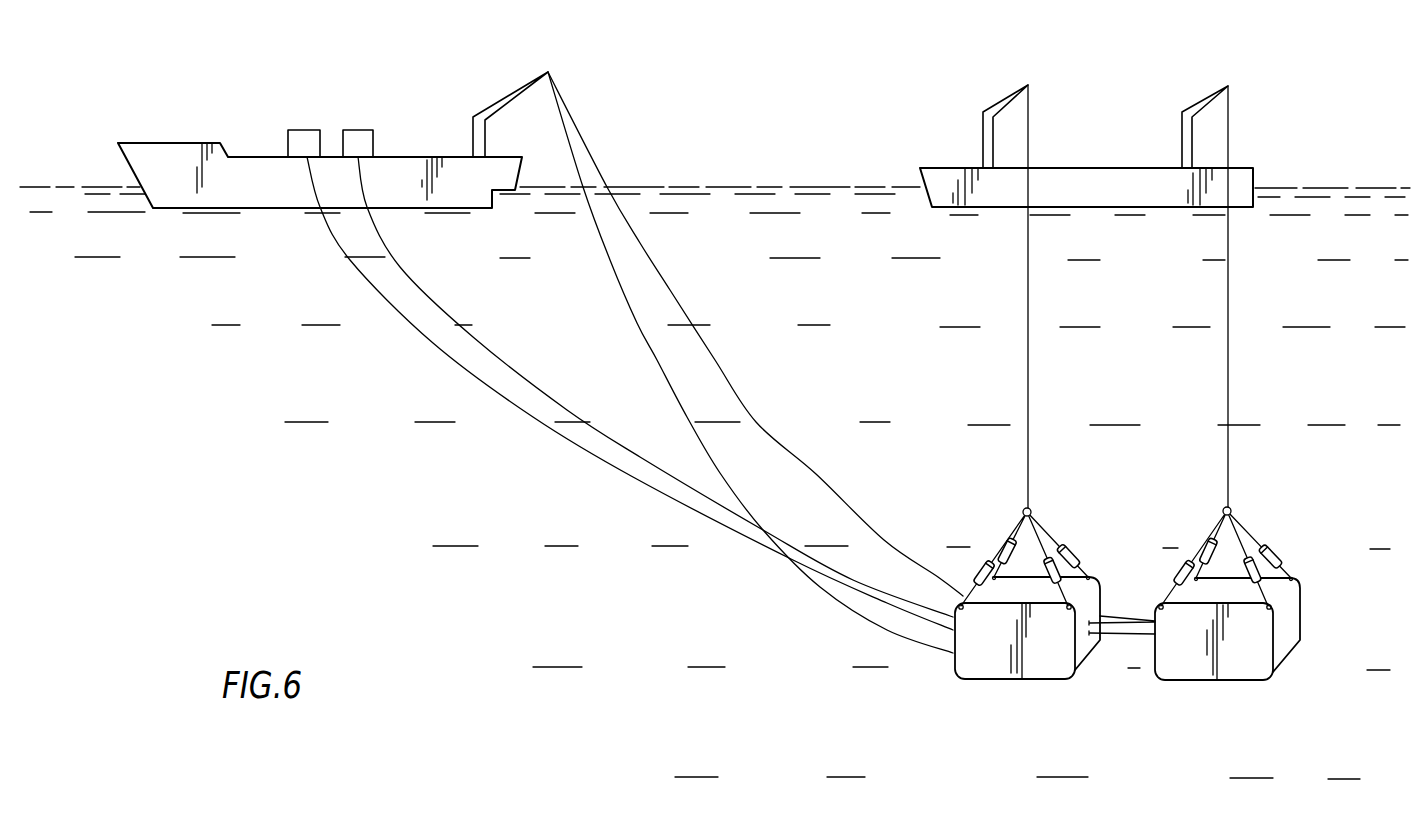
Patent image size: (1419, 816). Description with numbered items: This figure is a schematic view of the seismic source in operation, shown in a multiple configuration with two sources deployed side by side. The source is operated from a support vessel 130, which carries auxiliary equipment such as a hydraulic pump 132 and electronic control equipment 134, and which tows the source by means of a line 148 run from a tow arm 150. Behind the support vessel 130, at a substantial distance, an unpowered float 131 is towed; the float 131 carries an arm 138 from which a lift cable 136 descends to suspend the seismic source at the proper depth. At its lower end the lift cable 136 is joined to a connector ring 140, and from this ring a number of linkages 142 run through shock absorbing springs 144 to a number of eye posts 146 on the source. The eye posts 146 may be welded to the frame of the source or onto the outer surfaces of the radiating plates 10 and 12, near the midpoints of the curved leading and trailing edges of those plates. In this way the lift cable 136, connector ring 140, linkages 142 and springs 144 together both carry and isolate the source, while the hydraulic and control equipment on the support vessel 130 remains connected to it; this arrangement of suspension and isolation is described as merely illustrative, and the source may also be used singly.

The radiating plate 10 is at (1100, 645).
The radiating plate 12 is at (1065, 680).
The support vessel 130 is at (180, 143).
The float 131 is at (1110, 167).
The hydraulic pump 132 is at (303, 130).
The electronic control equipment 134 is at (358, 130).
The lift cable 136 is at (1030, 309).
The arm 138 is at (993, 103).
The connector ring 140 is at (1030, 508).
The linkage 142 is at (1048, 530).
The shock absorbing spring 144 is at (1083, 557).
The eye post 146 is at (1275, 620).
The line 148 is at (672, 290).
The tow arm 150 is at (522, 83).